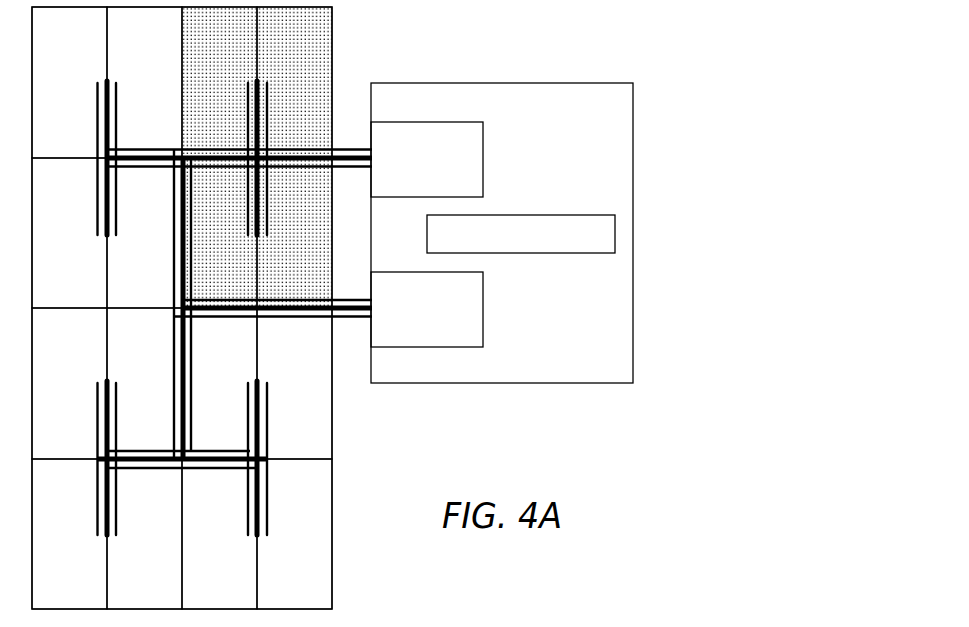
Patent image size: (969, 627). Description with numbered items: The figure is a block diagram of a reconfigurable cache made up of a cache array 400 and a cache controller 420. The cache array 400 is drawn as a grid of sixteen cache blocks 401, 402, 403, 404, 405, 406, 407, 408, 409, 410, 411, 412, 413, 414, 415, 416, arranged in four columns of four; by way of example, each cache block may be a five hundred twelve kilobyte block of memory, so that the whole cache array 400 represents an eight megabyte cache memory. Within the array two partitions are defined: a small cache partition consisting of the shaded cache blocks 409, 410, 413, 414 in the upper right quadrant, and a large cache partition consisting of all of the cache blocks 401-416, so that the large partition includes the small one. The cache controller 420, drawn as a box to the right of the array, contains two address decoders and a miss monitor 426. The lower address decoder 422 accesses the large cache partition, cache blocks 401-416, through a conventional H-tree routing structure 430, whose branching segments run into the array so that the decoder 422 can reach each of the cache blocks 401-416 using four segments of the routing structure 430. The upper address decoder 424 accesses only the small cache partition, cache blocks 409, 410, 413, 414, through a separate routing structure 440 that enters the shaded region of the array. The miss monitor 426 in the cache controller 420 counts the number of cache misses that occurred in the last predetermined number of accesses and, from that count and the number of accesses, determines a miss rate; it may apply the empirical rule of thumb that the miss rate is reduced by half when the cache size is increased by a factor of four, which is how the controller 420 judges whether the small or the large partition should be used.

The cache array 400 is at (332, 590).
The cache block 401 is at (87, 76).
The cache block 402 is at (87, 266).
The cache block 403 is at (87, 378).
The cache block 404 is at (87, 566).
The cache block 405 is at (162, 76).
The cache block 406 is at (162, 266).
The cache block 407 is at (162, 378).
The cache block 408 is at (162, 566).
The cache block 409 is at (237, 76).
The cache block 410 is at (237, 266).
The cache block 411 is at (237, 378).
The cache block 412 is at (237, 566).
The cache block 413 is at (312, 76).
The cache block 414 is at (312, 266).
The cache block 415 is at (312, 378).
The cache block 416 is at (312, 566).
The cache controller 420 is at (583, 83).
The address decoder 422 is at (483, 303).
The address decoder 424 is at (483, 128).
The miss monitor 426 is at (561, 215).
The H-tree routing structure 430 is at (268, 441).
The routing structure 440 is at (360, 148).